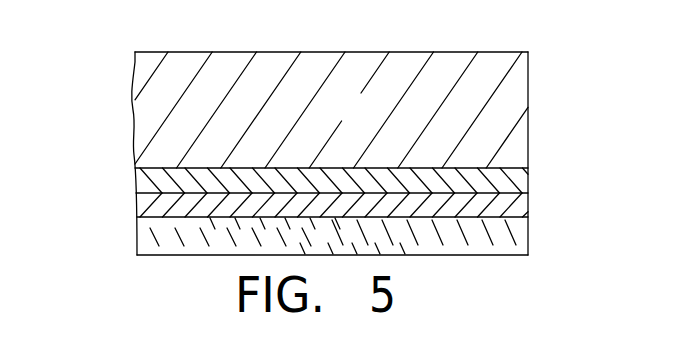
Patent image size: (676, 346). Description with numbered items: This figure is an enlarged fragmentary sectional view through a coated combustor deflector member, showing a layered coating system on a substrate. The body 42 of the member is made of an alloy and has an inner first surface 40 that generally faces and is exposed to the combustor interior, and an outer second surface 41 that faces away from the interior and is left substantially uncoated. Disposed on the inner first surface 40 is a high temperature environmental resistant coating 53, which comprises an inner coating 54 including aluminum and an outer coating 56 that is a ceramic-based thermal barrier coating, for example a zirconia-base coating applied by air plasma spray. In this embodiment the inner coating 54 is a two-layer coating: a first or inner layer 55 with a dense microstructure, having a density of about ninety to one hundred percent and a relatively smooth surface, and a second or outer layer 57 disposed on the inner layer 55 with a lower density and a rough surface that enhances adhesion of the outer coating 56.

The inner first surface 40 is at (139, 183).
The outer second surface 41 is at (407, 53).
The body 42 is at (363, 118).
The high temperature environmental resistant coating 53 is at (104, 214).
The inner coating 54 is at (558, 192).
The first or inner layer 55 is at (513, 181).
The outer coating 56 is at (507, 248).
The second or outer layer 57 is at (520, 207).